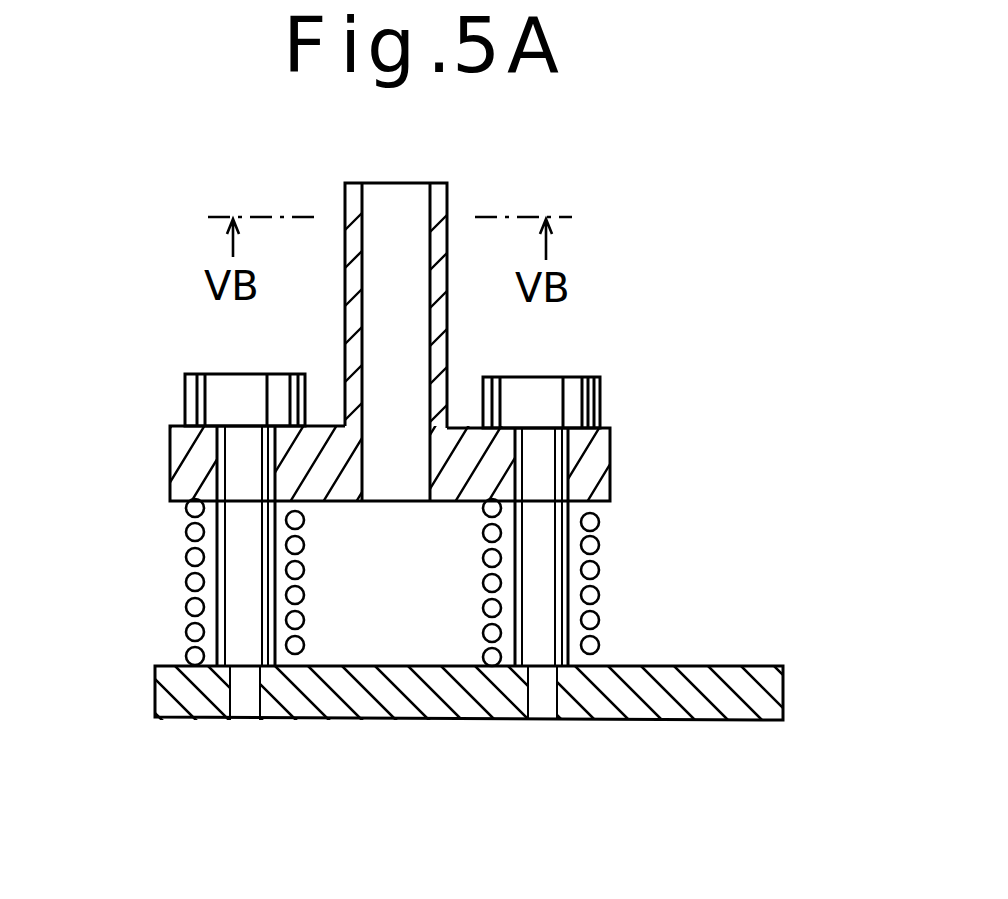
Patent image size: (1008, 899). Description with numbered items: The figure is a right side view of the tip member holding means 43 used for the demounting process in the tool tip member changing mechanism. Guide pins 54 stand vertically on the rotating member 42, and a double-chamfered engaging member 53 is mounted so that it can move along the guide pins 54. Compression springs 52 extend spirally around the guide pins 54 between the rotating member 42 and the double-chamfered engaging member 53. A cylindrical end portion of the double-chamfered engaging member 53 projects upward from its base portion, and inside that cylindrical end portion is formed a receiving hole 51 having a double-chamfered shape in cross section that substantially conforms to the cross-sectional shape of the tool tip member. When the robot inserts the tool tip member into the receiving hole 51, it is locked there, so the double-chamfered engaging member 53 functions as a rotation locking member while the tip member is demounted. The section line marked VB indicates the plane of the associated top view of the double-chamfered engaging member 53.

The rotating member 42 is at (783, 680).
The tip member holding means for the demounting process 43 is at (714, 256).
The receiving hole 51 is at (429, 242).
The compression spring 52 is at (600, 540).
The double-chamfered engaging member 53 is at (447, 312).
The guide pin 54 is at (197, 393).